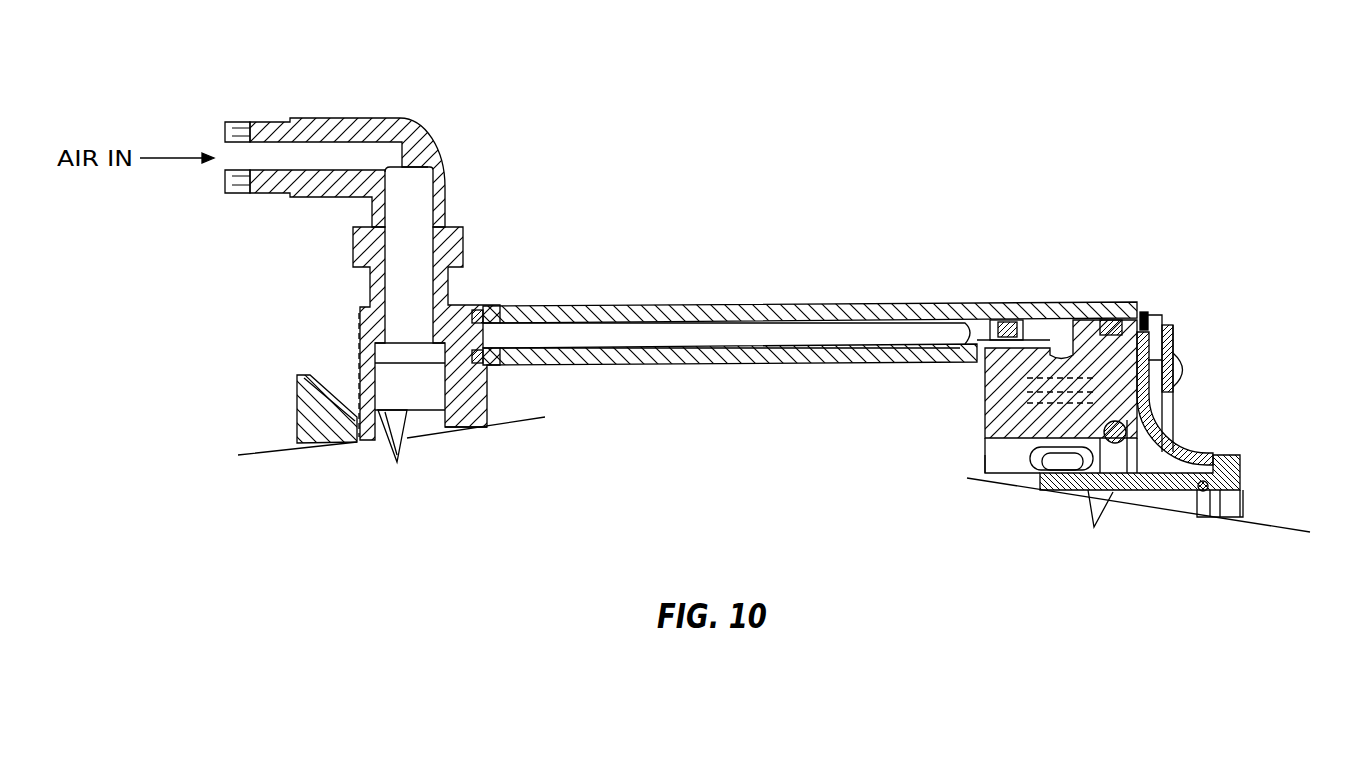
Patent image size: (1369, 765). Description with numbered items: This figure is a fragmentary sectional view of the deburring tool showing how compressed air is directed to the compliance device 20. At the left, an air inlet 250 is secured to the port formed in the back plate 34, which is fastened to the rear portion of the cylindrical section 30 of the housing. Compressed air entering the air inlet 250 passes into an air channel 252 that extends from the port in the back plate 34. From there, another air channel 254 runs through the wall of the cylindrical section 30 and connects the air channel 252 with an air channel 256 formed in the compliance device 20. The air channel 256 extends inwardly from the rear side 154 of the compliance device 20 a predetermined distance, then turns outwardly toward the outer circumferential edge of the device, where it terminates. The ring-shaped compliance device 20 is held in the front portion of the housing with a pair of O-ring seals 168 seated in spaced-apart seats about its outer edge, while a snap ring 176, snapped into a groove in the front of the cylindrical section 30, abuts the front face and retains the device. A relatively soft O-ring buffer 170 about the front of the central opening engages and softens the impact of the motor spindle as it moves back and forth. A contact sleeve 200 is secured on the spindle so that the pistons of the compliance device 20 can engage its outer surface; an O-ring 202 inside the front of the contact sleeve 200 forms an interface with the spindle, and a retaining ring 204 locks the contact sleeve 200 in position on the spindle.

The compliance device 20 is at (966, 405).
The cylindrical section 30 is at (793, 302).
The back plate 34 is at (300, 420).
The rear side 154 is at (985, 455).
The O-ring seals 168 is at (1002, 322).
The O-ring buffer 170 is at (1127, 435).
The snap ring 176 is at (1142, 317).
The contact sleeve 200 is at (1147, 488).
The O-ring 202 is at (1205, 483).
The retaining ring 204 is at (1245, 512).
The air inlet 250 is at (347, 128).
The air channel 252 is at (457, 347).
The air channel 254 is at (628, 335).
The air channel 256 is at (1027, 347).